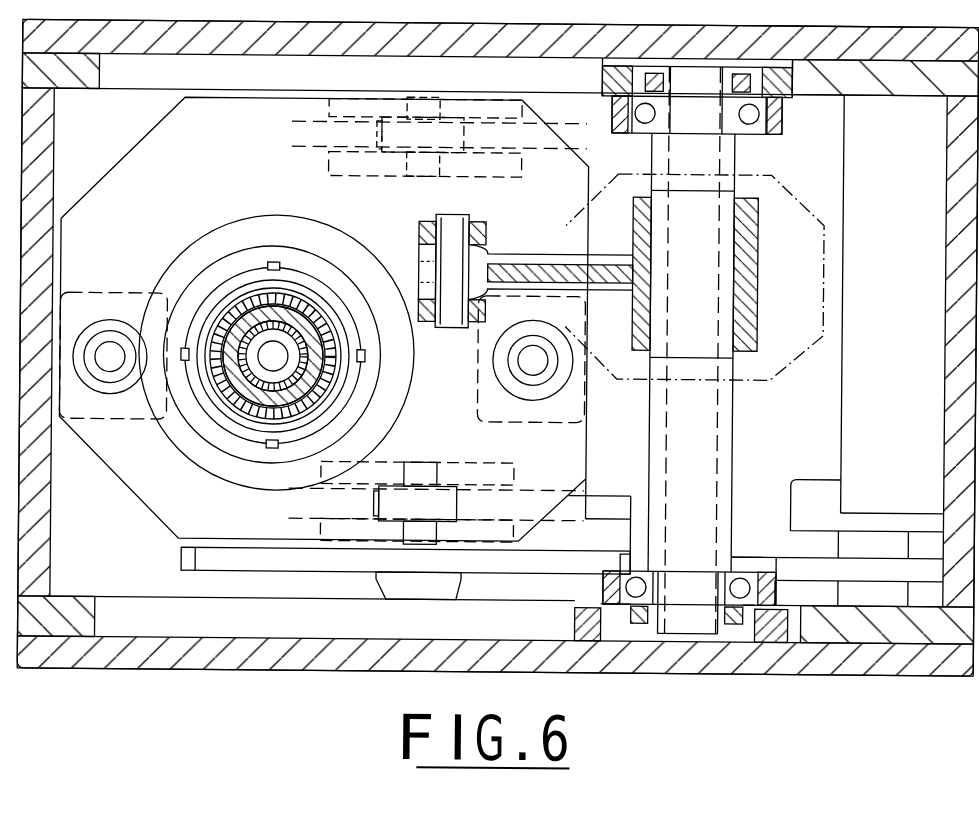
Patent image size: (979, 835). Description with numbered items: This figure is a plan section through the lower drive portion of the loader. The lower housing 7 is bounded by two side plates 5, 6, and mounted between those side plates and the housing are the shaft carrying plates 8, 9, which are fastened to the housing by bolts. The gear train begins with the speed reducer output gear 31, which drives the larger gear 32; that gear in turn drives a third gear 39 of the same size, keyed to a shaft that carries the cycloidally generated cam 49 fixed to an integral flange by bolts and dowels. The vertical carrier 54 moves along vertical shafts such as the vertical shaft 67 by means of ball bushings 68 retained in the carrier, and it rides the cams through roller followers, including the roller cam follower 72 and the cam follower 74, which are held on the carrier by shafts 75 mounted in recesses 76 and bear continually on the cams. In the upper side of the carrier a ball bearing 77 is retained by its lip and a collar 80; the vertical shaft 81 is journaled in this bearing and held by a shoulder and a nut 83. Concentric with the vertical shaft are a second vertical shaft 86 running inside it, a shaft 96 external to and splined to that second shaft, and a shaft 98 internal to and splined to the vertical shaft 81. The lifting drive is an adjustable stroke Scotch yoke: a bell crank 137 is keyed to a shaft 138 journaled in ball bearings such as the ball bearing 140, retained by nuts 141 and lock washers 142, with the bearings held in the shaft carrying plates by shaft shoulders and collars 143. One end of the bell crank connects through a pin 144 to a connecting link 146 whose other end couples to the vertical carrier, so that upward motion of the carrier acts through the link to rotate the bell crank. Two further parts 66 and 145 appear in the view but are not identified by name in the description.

The side plate 5 is at (212, 62).
The side plate 6 is at (142, 640).
The lower housing 7 is at (54, 250).
The shaft carrying plate 8 is at (85, 600).
The shaft carrying plate 9 is at (60, 92).
The speed reducer output gear 31 is at (780, 555).
The larger gear 32 is at (822, 518).
The third gear 39 is at (757, 130).
The cycloidally generated cam 49 is at (629, 494).
The vertical carrier 54 is at (145, 505).
The bolt 66 is at (110, 373).
The vertical shaft 67 is at (516, 362).
The ball bushing 68 is at (112, 336).
The roller cam follower 72 is at (378, 505).
The cam follower 74 is at (377, 137).
The shaft 75 is at (394, 168).
The recess 76 is at (522, 168).
The ball bearing 77 is at (250, 249).
The collar 80 is at (219, 237).
The vertical shaft 81 is at (234, 378).
The nut 83 is at (317, 277).
The second vertical shaft 86 is at (250, 380).
The shaft 96 is at (175, 395).
The shaft 98 is at (280, 408).
The bell crank 137 is at (757, 250).
The shaft 138 is at (734, 447).
The ball bearing 140 is at (632, 552).
The nut 141 is at (660, 83).
The lock washer 142 is at (602, 72).
The collar 143 is at (792, 78).
The pin 144 is at (466, 326).
The clutch disc 145 is at (470, 215).
The connecting link 146 is at (487, 254).